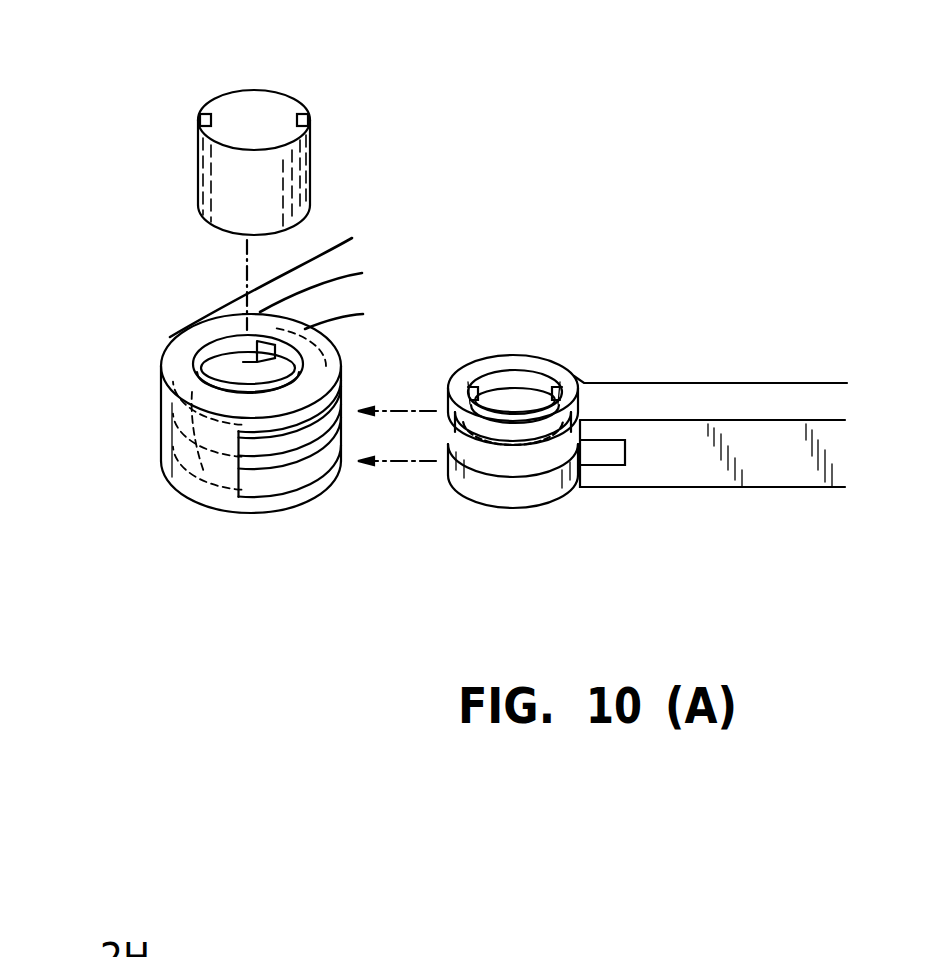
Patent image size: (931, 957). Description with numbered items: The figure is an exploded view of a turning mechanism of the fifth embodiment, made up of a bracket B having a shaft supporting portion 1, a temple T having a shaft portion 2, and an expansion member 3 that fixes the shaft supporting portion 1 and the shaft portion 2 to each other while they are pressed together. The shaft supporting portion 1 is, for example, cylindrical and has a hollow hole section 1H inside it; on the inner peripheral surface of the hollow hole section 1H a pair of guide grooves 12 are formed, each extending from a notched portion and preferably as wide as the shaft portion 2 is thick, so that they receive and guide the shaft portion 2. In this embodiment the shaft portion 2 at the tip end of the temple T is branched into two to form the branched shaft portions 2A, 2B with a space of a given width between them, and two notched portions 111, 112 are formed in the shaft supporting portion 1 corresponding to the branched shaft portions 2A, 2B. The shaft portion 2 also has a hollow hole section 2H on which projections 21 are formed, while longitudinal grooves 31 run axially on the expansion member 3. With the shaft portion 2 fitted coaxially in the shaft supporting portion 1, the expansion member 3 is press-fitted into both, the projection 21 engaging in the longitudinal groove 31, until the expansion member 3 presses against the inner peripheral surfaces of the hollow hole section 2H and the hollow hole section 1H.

The shaft supporting portion 1 is at (162, 356).
The hollow hole section 1H is at (218, 347).
The guide groove 12 is at (230, 467).
The notched portion 111 is at (262, 446).
The notched portion 112 is at (293, 478).
The shaft portion 2 is at (558, 370).
The branched shaft portion 2A is at (520, 498).
The branched shaft portion 2B is at (503, 445).
The hollow hole section 2H is at (503, 380).
The projection 21 is at (486, 349).
The expansion member 3 is at (257, 102).
The longitudinal groove 31 is at (305, 115).
The bracket B is at (320, 248).
The temple T is at (770, 392).